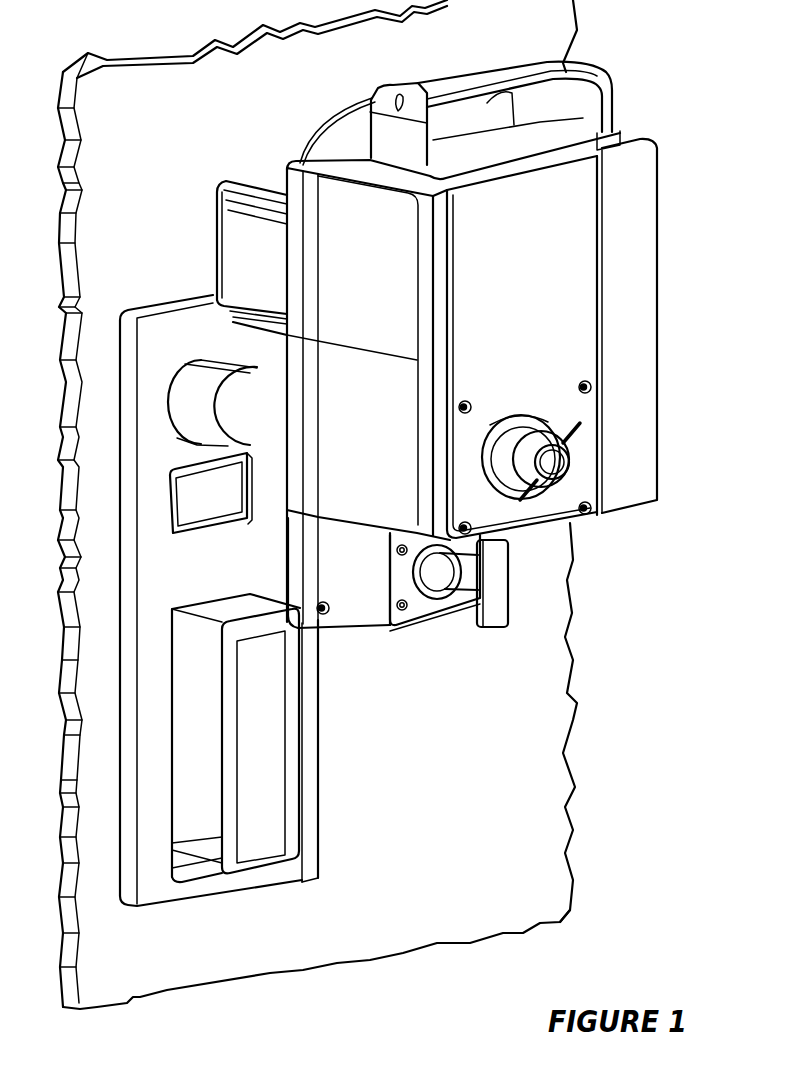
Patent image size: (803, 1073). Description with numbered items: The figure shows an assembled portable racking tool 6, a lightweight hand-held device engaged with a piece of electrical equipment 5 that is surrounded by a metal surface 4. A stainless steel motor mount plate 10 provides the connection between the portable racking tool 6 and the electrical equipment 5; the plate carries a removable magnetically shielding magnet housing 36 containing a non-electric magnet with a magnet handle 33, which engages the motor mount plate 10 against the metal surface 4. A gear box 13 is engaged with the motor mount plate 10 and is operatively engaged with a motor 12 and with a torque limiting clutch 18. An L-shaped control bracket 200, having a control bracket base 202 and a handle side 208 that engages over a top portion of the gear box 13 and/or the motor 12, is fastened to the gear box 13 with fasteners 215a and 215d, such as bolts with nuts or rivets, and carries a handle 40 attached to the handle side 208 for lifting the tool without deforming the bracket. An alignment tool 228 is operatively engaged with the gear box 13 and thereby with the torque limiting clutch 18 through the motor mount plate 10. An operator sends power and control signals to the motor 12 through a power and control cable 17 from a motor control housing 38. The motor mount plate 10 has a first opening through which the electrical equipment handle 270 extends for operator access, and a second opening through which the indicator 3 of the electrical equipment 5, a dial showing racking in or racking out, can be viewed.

The metal surface 4 is at (102, 173).
The electrical equipment 5 is at (570, 912).
The portable racking tool 6 is at (199, 179).
The motor 12 is at (240, 262).
The power and control cable 17 is at (347, 108).
The handle 40 is at (490, 77).
The handle side 208 is at (570, 130).
The motor control housing 38 is at (628, 203).
The control bracket base 202 is at (578, 283).
The control bracket 200 is at (598, 341).
The fastener 215a is at (477, 404).
The fastener 215d is at (598, 510).
The alignment tool 228 is at (553, 487).
The non-electric magnet with a magnet handle 33 is at (500, 587).
The removable magnetically shielding magnet housing 36 is at (440, 613).
The gear box 13 is at (358, 497).
The indicator 3 is at (207, 500).
The torque limiting clutch 18 is at (247, 440).
The motor mount plate 10 is at (160, 568).
The electrical equipment handle 270 is at (283, 747).